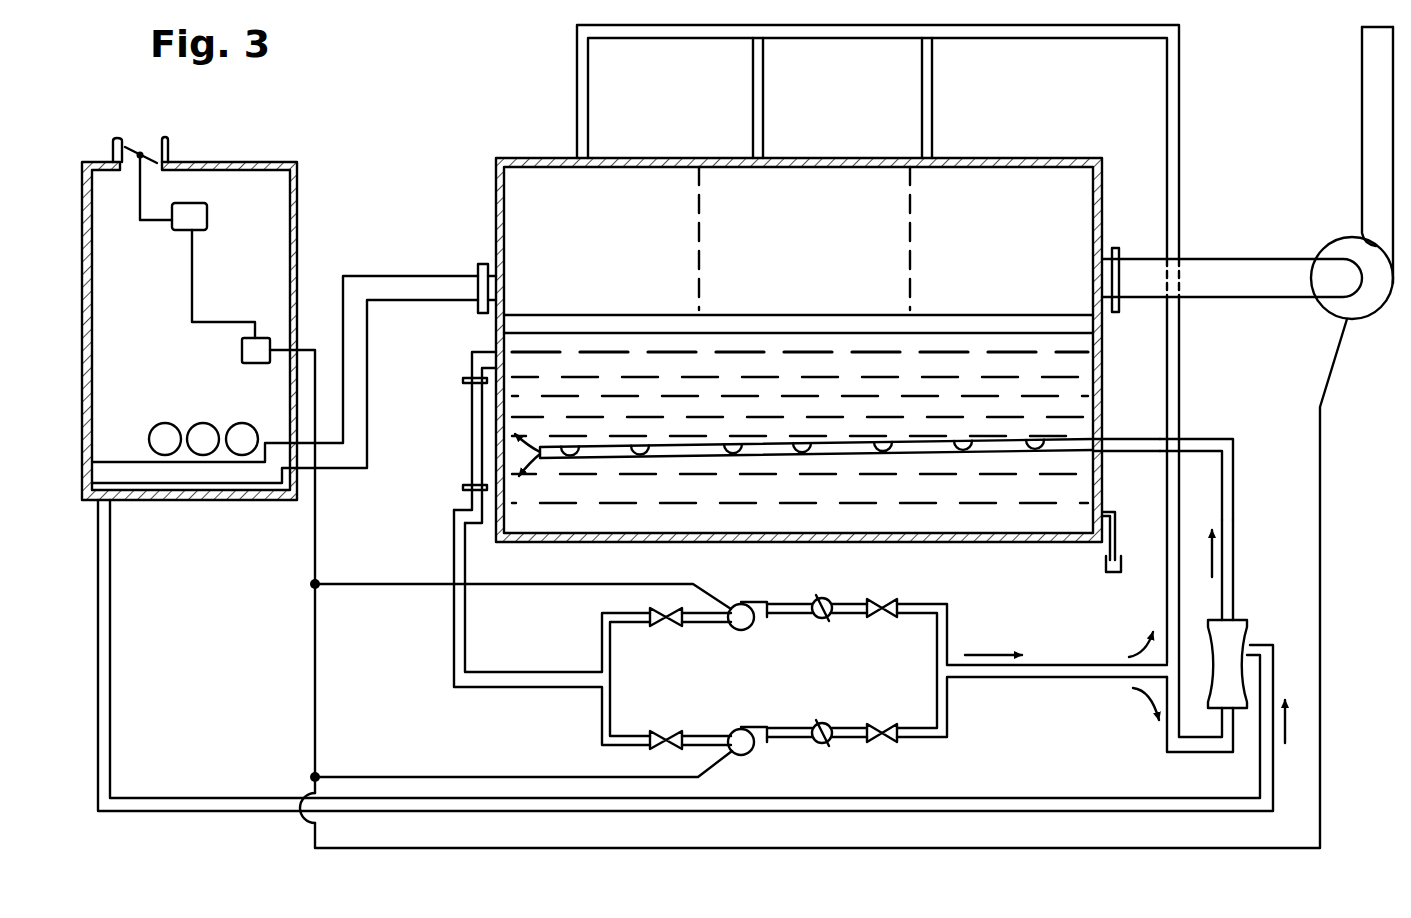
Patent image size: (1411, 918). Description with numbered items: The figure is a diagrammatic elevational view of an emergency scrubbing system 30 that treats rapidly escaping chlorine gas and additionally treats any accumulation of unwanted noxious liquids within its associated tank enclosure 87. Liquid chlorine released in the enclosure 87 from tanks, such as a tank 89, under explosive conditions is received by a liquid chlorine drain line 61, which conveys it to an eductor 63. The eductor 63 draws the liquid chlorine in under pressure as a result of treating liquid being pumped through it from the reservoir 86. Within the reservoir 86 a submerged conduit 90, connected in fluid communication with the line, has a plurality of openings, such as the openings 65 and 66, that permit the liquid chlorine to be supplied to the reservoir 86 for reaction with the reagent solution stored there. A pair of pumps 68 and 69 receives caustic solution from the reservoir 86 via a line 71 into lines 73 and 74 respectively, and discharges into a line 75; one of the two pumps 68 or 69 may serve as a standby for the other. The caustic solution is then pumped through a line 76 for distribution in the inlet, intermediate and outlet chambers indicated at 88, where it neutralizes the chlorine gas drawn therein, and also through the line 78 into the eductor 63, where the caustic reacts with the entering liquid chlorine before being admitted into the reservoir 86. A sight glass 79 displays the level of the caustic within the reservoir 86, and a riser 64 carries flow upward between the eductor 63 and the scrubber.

The emergency scrubbing system 30 is at (436, 148).
The tank enclosure 87 is at (304, 225).
The tank 89 is at (165, 422).
The liquid chlorine drain line 61 is at (110, 684).
The inlet, intermediate and outlet chambers 88 is at (949, 203).
The reservoir 86 is at (947, 512).
The opening 66 is at (734, 458).
The opening 65 is at (641, 458).
The submerged conduit 90 is at (1092, 447).
The line 76 is at (1181, 428).
The riser conduit 64 is at (1236, 511).
The eductor 63 is at (1252, 631).
The line 78 is at (1161, 730).
The sight glass 79 is at (470, 438).
The line 71 is at (454, 628).
The line 73 is at (612, 610).
The pump 68 is at (753, 627).
The line 74 is at (641, 735).
The pump 69 is at (760, 739).
The line 75 is at (1087, 662).